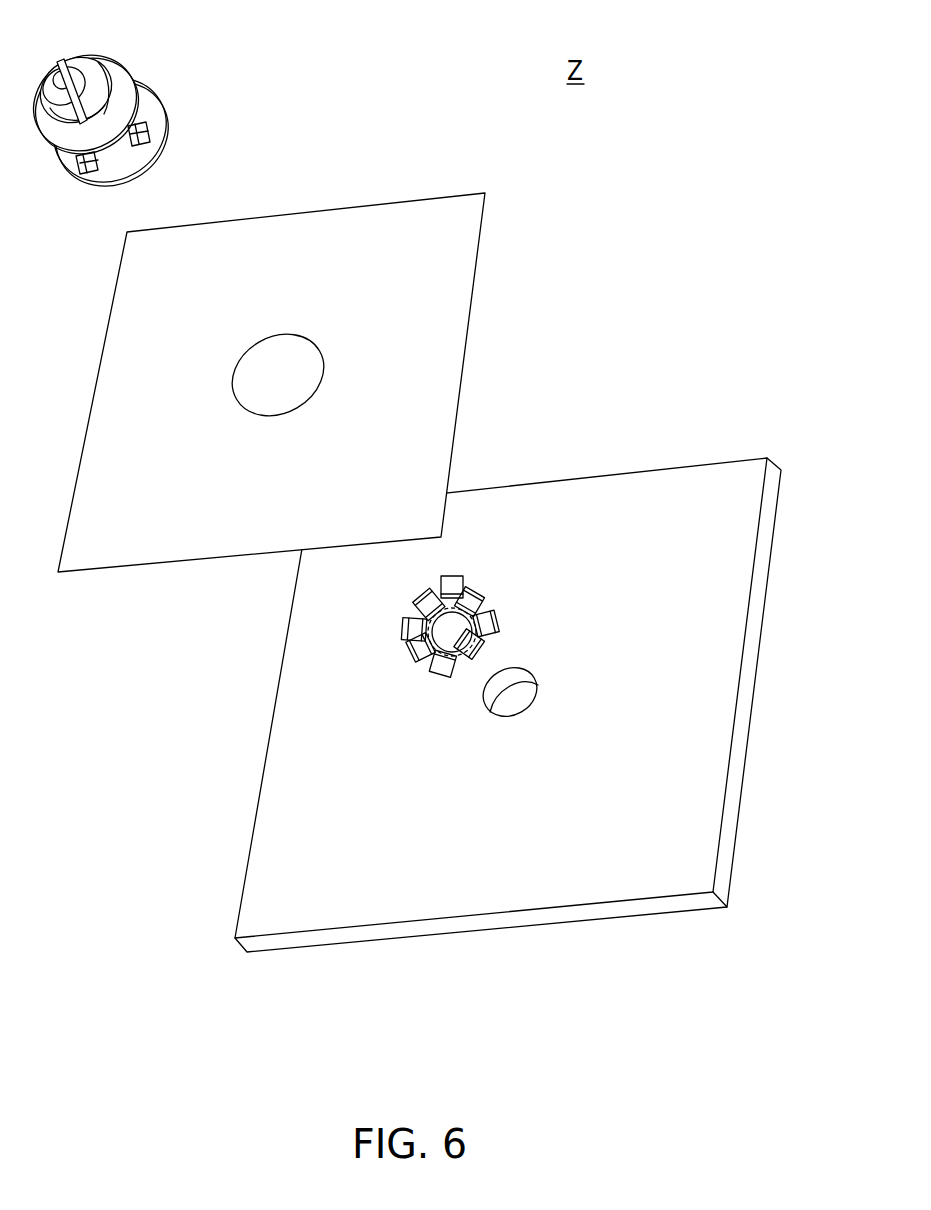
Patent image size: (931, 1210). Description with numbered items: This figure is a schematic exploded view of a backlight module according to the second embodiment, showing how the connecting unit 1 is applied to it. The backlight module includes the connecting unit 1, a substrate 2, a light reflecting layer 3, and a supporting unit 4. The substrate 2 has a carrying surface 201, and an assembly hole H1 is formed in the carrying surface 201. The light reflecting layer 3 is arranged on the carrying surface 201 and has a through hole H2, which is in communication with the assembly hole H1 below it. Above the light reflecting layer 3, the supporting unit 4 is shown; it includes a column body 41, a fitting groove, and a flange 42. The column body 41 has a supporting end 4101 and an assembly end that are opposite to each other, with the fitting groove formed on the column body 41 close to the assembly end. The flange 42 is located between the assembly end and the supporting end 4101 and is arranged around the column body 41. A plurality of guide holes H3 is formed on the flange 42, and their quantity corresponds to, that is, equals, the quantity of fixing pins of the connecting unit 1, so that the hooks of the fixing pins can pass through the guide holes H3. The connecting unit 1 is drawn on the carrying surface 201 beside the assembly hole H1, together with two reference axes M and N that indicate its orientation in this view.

The connecting unit 1 is at (472, 558).
The substrate 2 is at (718, 457).
The carrying surface 201 is at (640, 497).
The light reflecting layer 3 is at (431, 197).
The supporting unit 4 is at (119, 107).
The column body 41 is at (137, 118).
The flange 42 is at (165, 115).
The supporting end 4101 is at (80, 63).
The assembly hole H1 is at (512, 697).
The through hole H2 is at (306, 366).
The guide holes H3 is at (145, 136).
The axis M is at (483, 663).
The axis N is at (528, 611).